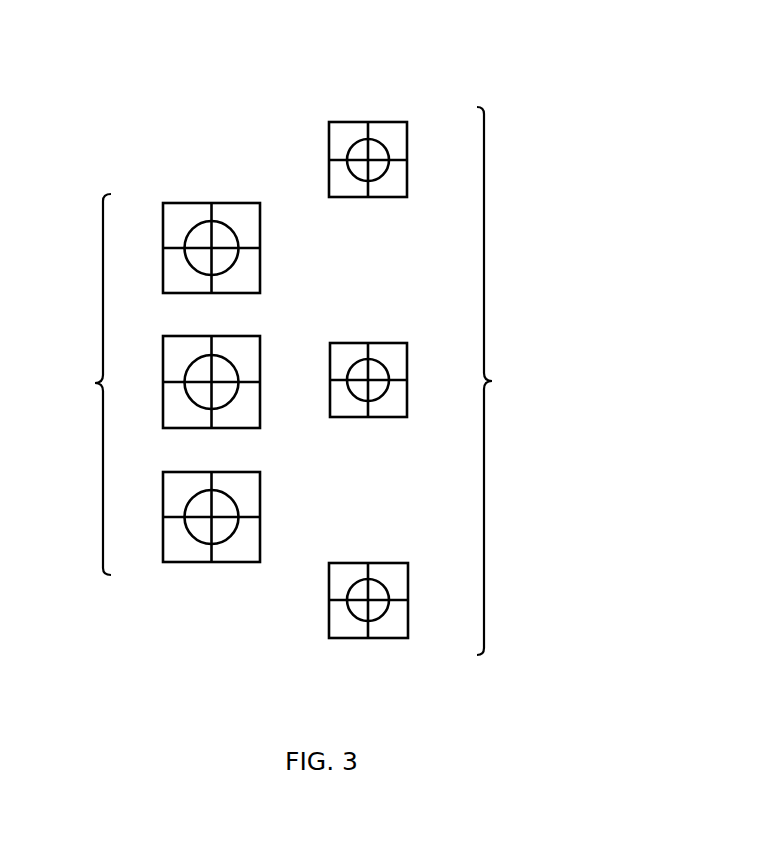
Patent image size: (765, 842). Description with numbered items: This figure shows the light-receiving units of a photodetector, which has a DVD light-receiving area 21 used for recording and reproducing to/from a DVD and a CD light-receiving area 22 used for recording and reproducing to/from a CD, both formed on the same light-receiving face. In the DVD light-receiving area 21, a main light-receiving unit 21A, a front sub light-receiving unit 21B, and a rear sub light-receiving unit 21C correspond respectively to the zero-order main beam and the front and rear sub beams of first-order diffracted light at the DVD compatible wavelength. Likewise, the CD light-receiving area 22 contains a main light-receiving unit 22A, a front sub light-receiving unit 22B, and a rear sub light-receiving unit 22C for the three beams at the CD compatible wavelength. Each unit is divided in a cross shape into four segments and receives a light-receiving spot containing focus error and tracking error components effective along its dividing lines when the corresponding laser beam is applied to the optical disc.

The DVD light-receiving area 21 is at (93, 383).
The CD light-receiving area 22 is at (494, 382).
The main light-receiving unit 21A is at (272, 361).
The front sub light-receiving unit 21B is at (272, 234).
The rear sub light-receiving unit 21C is at (274, 526).
The main light-receiving unit 22A is at (420, 363).
The front sub light-receiving unit 22B is at (400, 105).
The rear sub light-receiving unit 22C is at (396, 656).